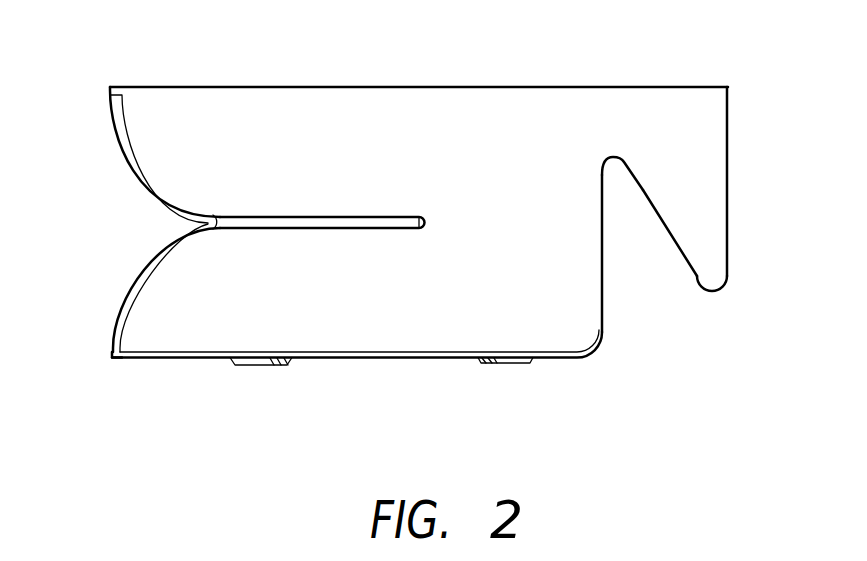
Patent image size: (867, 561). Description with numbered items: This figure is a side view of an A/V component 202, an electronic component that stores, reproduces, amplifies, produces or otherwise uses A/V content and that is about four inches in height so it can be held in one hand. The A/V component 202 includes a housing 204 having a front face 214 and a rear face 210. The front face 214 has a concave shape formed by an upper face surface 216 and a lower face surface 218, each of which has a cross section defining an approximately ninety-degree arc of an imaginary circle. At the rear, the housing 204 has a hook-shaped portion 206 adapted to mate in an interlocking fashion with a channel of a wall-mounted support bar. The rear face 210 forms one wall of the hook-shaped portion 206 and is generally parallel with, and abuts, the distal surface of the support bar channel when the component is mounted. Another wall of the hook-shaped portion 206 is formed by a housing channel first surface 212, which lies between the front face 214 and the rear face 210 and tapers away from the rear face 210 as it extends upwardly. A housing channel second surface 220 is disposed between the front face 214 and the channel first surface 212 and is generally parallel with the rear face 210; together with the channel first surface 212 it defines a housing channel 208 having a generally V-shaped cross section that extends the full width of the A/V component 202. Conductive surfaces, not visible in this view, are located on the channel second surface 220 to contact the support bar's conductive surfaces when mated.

The A/V component 202 is at (475, 333).
The housing 204 is at (386, 335).
The hook-shaped portion 206 is at (712, 176).
The housing channel 208 is at (638, 243).
The rear face 210 is at (734, 241).
The housing channel first surface 212 is at (643, 190).
The front face 214 is at (129, 272).
The upper face surface 216 is at (130, 166).
The lower face surface 218 is at (110, 342).
The housing channel second surface 220 is at (603, 315).